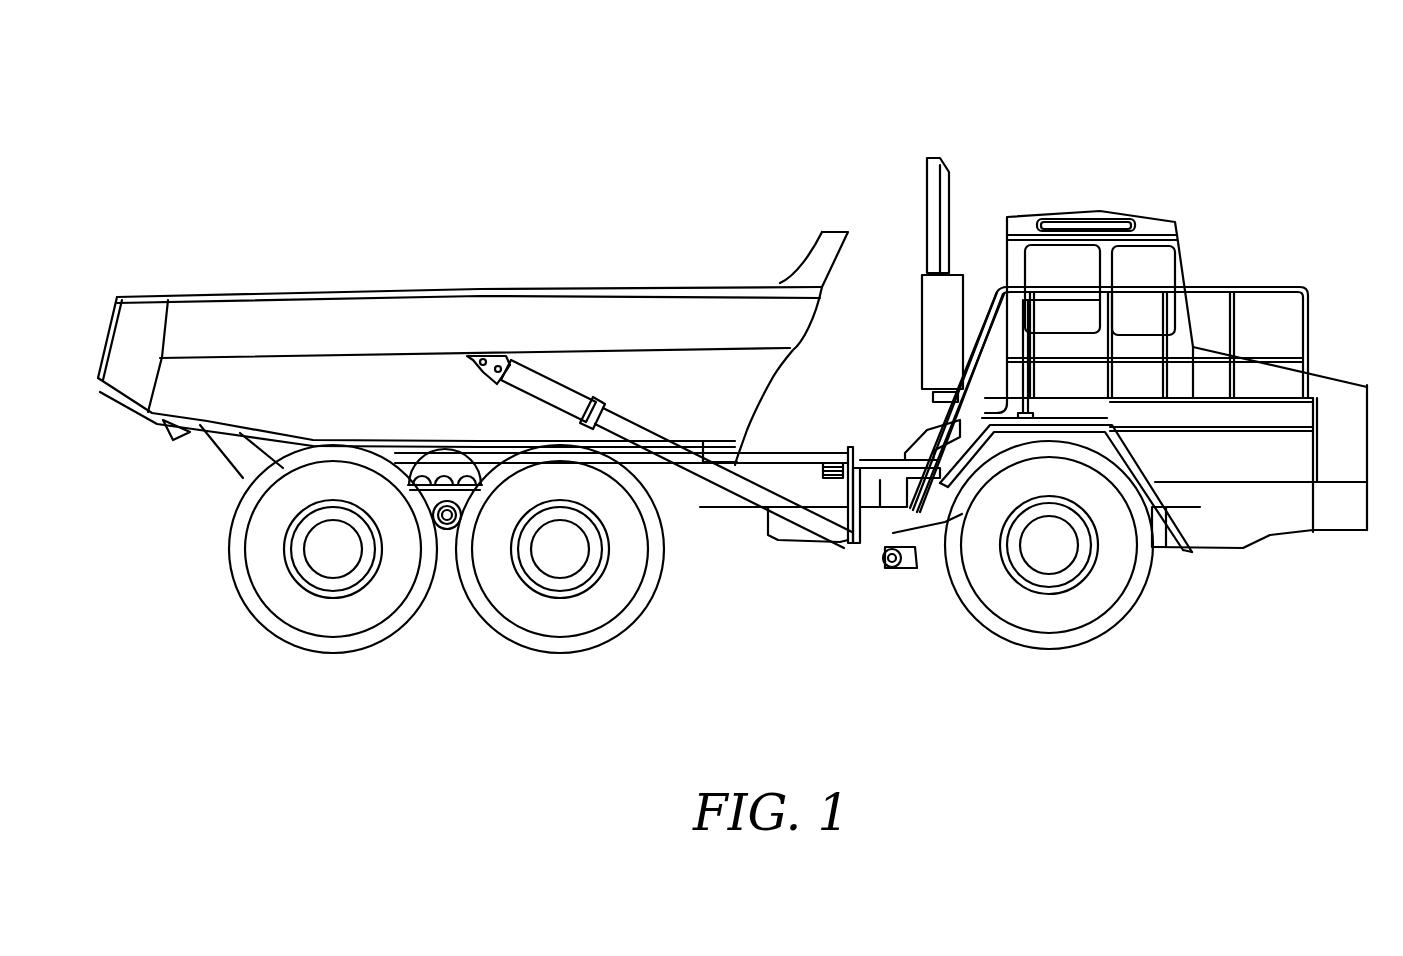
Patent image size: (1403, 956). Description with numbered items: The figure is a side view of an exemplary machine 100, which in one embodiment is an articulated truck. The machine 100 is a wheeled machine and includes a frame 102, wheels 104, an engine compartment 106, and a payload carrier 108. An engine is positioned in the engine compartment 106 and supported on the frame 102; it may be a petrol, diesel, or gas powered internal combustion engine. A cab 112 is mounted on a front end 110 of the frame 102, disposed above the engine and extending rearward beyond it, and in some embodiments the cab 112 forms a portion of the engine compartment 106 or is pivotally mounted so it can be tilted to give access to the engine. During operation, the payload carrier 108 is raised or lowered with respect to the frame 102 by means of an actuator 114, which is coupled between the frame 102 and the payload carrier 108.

The machine 100 is at (785, 127).
The frame 102 is at (1218, 548).
The wheels 104 is at (333, 653).
The engine compartment 106 is at (1346, 383).
The payload carrier 108 is at (461, 336).
The front end 110 is at (1232, 248).
The cab 112 is at (1153, 232).
The actuator 114 is at (898, 440).